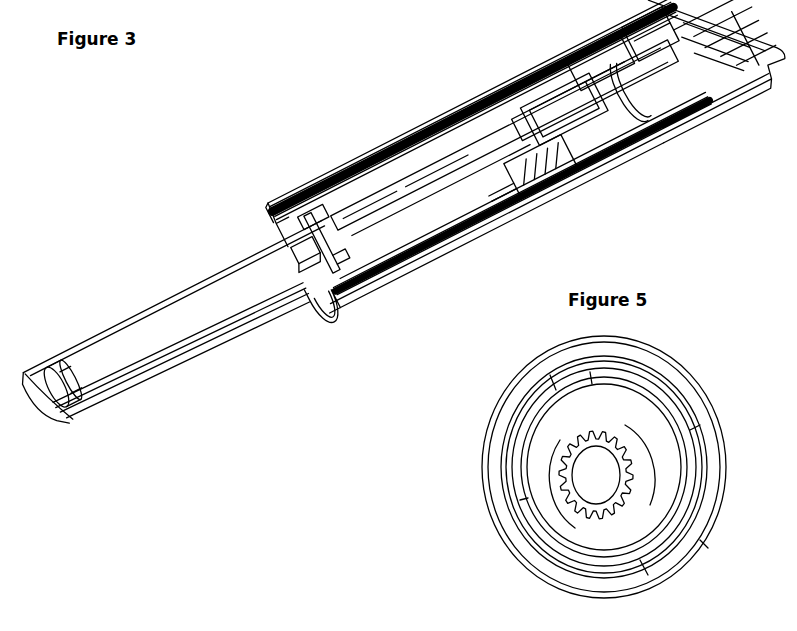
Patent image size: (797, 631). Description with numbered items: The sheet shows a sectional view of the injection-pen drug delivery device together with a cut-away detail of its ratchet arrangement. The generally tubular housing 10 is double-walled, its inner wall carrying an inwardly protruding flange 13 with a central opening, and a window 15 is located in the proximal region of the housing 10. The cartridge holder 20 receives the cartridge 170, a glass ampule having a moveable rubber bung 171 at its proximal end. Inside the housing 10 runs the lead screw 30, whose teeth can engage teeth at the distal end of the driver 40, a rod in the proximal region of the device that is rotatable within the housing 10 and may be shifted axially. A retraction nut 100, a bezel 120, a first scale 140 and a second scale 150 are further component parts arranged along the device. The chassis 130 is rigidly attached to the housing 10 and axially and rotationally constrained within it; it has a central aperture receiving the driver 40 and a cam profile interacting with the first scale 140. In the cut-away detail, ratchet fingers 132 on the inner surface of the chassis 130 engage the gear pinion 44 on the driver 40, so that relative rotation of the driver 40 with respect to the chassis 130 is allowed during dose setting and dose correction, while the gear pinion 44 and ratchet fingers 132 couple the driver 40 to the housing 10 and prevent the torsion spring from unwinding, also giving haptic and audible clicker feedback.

In FIG. 3, the housing 10 is at (438, 252).
In FIG. 3, the flange 13 is at (538, 162).
In FIG. 3, the window 15 is at (677, 123).
In FIG. 3, the cartridge holder 20 is at (157, 297).
In FIG. 3, the lead screw 30 is at (432, 185).
In FIG. 3, the driver 40 is at (558, 118).
In FIG. 5, the gear pinion 44 is at (577, 467).
In FIG. 3, the retraction nut 100 is at (327, 230).
In FIG. 3, the bezel 120 is at (323, 298).
In FIG. 5, the chassis 130 is at (439, 445).
In FIG. 5, the ratchet fingers 132 is at (637, 470).
In FIG. 3, the first scale 140 is at (640, 27).
In FIG. 3, the second scale 150 is at (590, 50).
In FIG. 3, the cartridge 170 is at (52, 373).
In FIG. 3, the rubber bung 171 is at (300, 250).